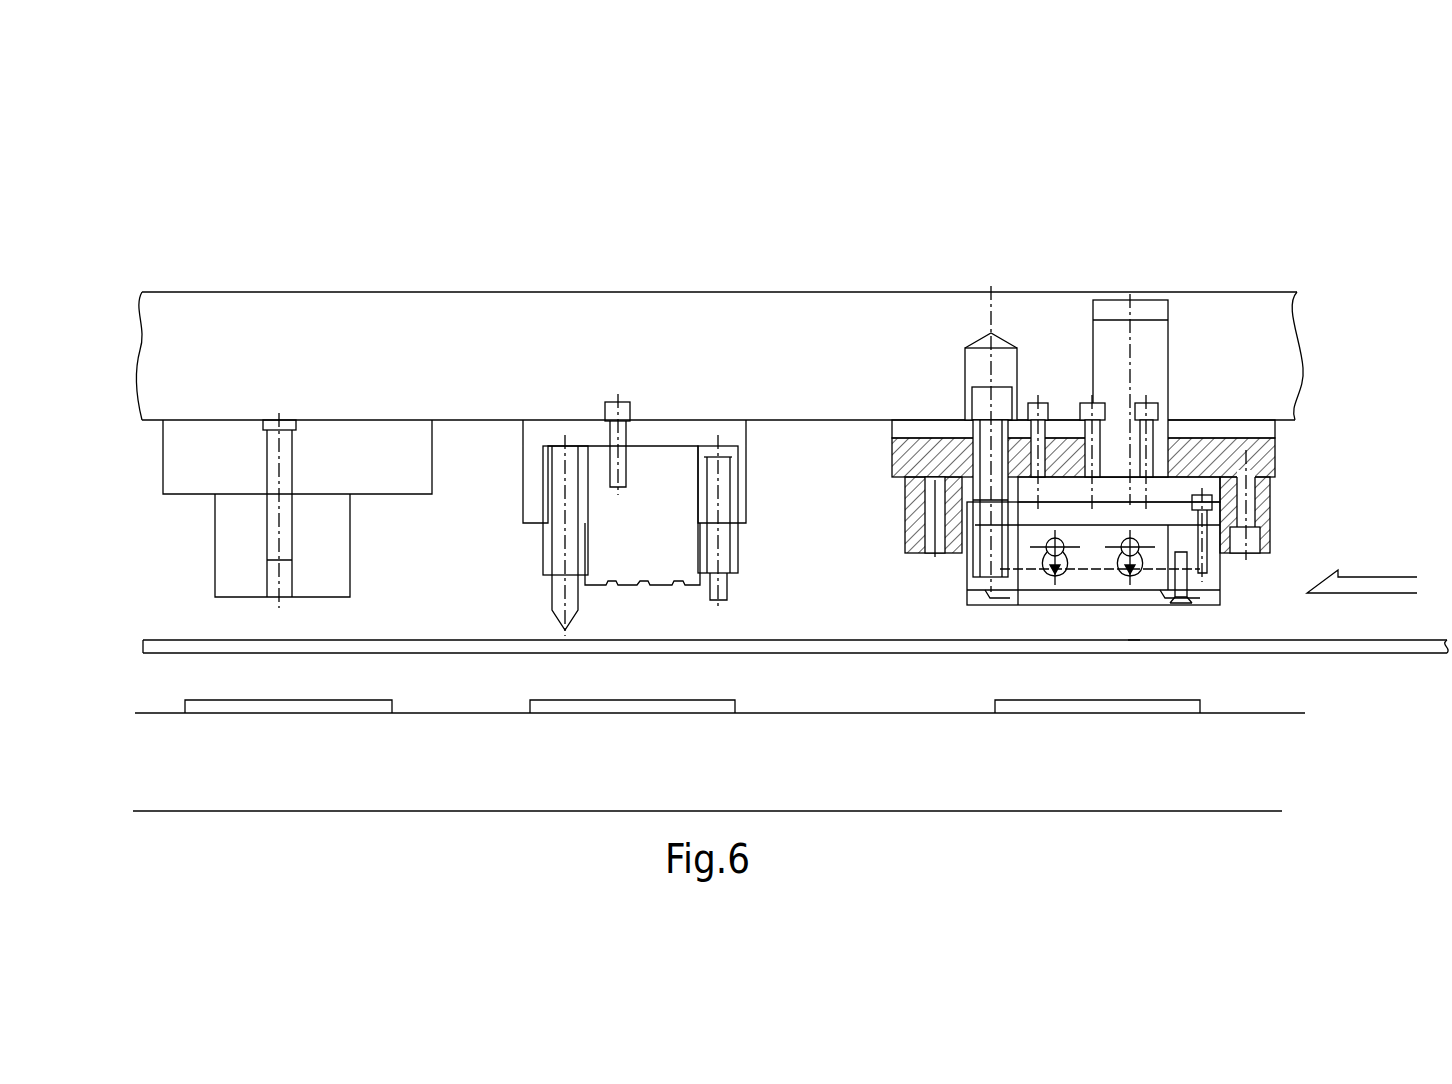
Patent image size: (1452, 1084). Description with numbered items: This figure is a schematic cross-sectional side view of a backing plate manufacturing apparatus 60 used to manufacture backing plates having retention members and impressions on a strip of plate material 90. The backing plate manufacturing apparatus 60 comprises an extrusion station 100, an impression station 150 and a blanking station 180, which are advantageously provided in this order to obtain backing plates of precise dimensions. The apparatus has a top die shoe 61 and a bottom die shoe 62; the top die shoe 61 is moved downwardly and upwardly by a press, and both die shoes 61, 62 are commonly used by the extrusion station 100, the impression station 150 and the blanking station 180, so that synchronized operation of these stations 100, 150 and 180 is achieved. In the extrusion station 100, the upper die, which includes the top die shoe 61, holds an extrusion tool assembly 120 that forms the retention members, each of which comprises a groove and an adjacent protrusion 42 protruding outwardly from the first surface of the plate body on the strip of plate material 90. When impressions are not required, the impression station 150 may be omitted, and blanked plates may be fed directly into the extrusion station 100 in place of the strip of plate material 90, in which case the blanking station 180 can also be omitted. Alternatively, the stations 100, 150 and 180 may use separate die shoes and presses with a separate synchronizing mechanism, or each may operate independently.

The backing plate manufacturing apparatus 60 is at (803, 222).
The top die shoe 61 is at (1207, 323).
The bottom die shoe 62 is at (1118, 790).
The strip of plate material 90 is at (1225, 647).
The protrusion 42 is at (1133, 638).
The extrusion station 100 is at (1083, 416).
The extrusion tool assembly 120 is at (967, 590).
The impression station 150 is at (634, 437).
The blanking station 180 is at (297, 424).